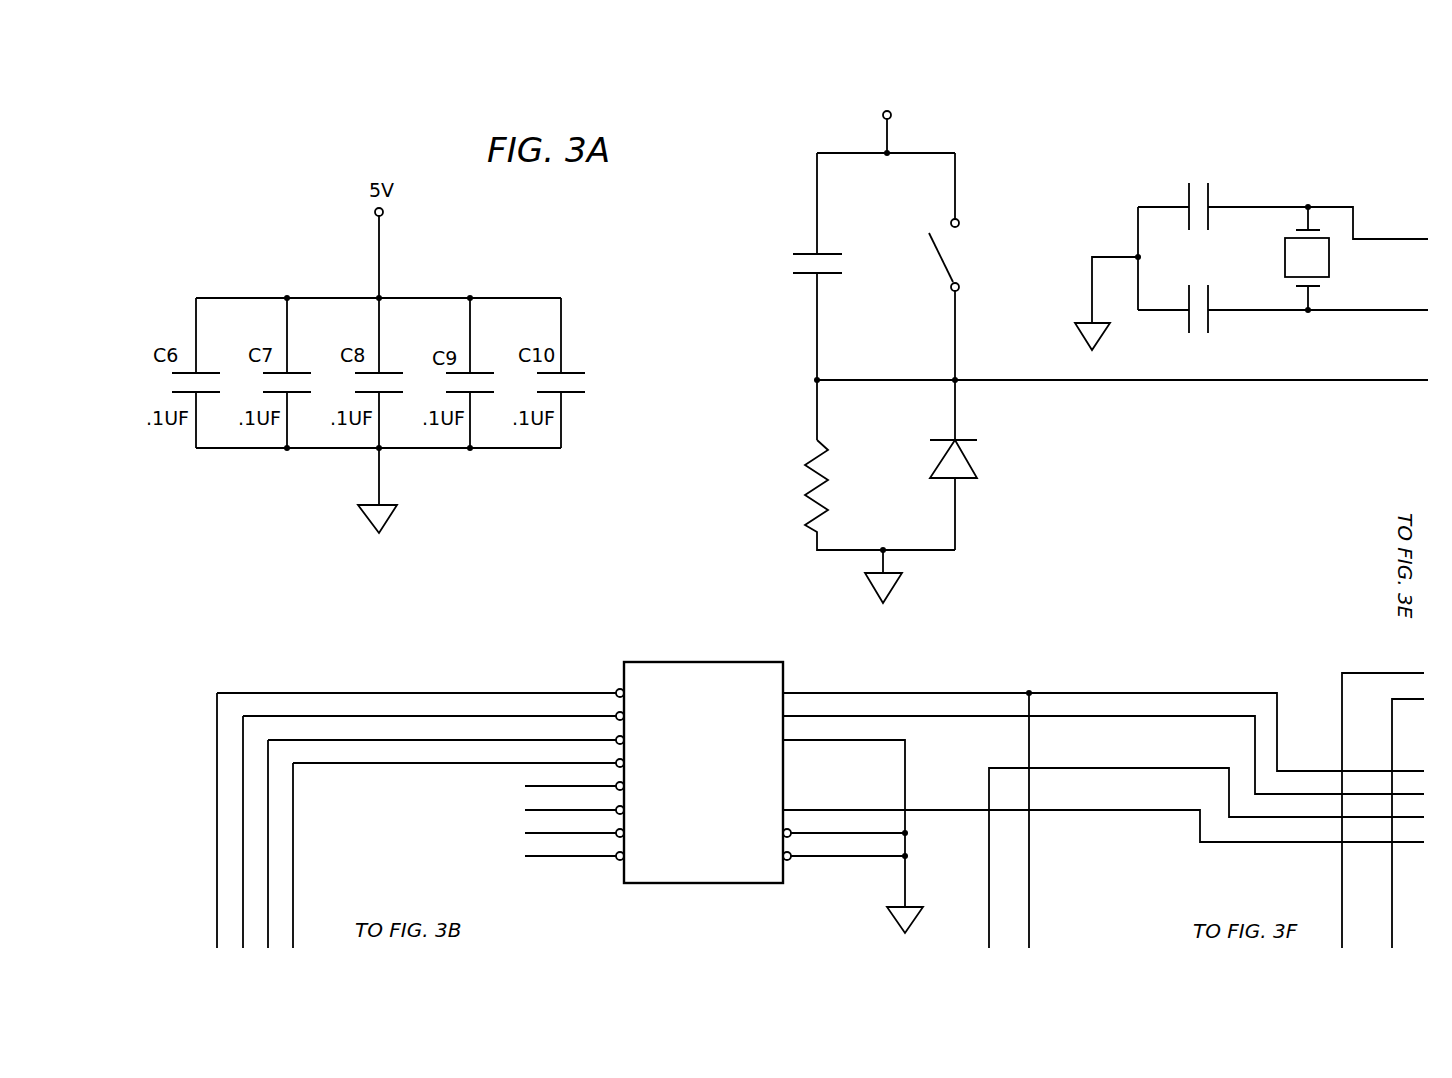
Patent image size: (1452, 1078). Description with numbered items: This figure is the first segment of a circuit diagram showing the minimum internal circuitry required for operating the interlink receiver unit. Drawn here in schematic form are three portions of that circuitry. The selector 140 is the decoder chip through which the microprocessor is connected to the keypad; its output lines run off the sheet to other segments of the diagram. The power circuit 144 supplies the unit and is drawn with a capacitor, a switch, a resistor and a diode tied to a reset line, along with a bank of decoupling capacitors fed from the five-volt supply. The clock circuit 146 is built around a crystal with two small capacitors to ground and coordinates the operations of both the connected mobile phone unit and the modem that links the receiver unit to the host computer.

The selector 140 is at (820, 782).
The power circuit 144 is at (1083, 354).
The clock circuit 146 is at (1259, 260).